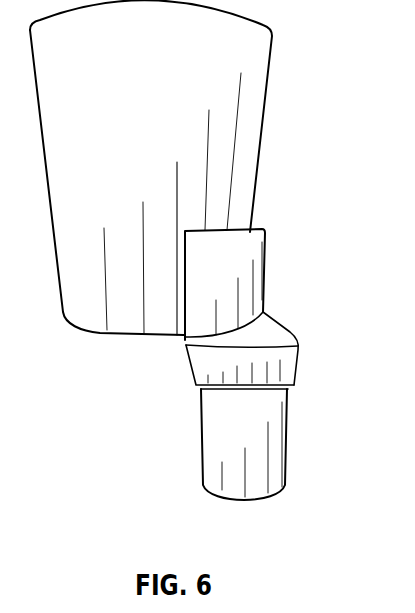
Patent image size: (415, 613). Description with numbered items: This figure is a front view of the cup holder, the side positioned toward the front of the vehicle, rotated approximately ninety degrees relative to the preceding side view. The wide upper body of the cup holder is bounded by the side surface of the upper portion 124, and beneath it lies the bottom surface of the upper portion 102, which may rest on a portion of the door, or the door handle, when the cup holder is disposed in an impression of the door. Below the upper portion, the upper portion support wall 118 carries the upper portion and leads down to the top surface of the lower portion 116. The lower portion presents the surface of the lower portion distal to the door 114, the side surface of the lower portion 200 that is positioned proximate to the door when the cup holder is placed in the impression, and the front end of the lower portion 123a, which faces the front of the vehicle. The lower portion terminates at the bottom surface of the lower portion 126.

The bottom surface of upper portion 102 is at (105, 338).
The side surface of upper portion 124 is at (265, 97).
The upper portion support wall 118 is at (268, 257).
The top surface of lower portion 116 is at (284, 340).
The surface of lower portion distal to door when disposed in impression 114 is at (200, 423).
The side surface of lower portion disposed proximate to door 200 is at (288, 438).
The front end of lower portion when cup holder is disposed in door 123a is at (232, 437).
The bottom surface of lower portion 126 is at (248, 502).